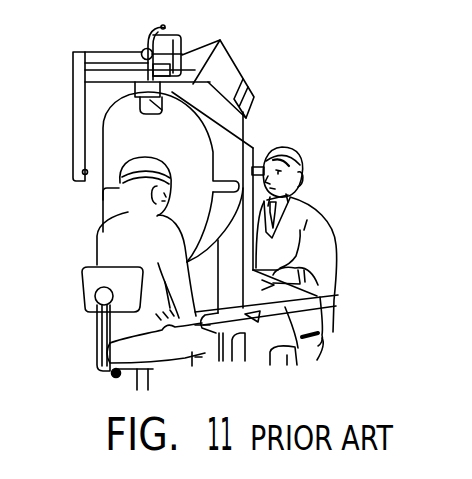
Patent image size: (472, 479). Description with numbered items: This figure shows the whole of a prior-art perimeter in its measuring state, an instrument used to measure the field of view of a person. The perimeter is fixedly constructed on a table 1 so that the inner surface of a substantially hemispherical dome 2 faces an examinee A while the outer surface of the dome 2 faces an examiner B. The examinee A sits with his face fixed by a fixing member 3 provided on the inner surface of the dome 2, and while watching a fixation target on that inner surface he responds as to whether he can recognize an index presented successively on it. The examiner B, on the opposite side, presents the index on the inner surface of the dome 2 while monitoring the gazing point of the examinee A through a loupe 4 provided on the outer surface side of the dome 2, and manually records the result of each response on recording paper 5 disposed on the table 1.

The table 1 is at (206, 199).
The substantially hemispherical dome 2 is at (122, 139).
The fixing member 3 is at (107, 198).
The loupe 4 is at (257, 167).
The recording paper 5 is at (381, 293).
The examinee A is at (113, 248).
The examiner B is at (320, 207).